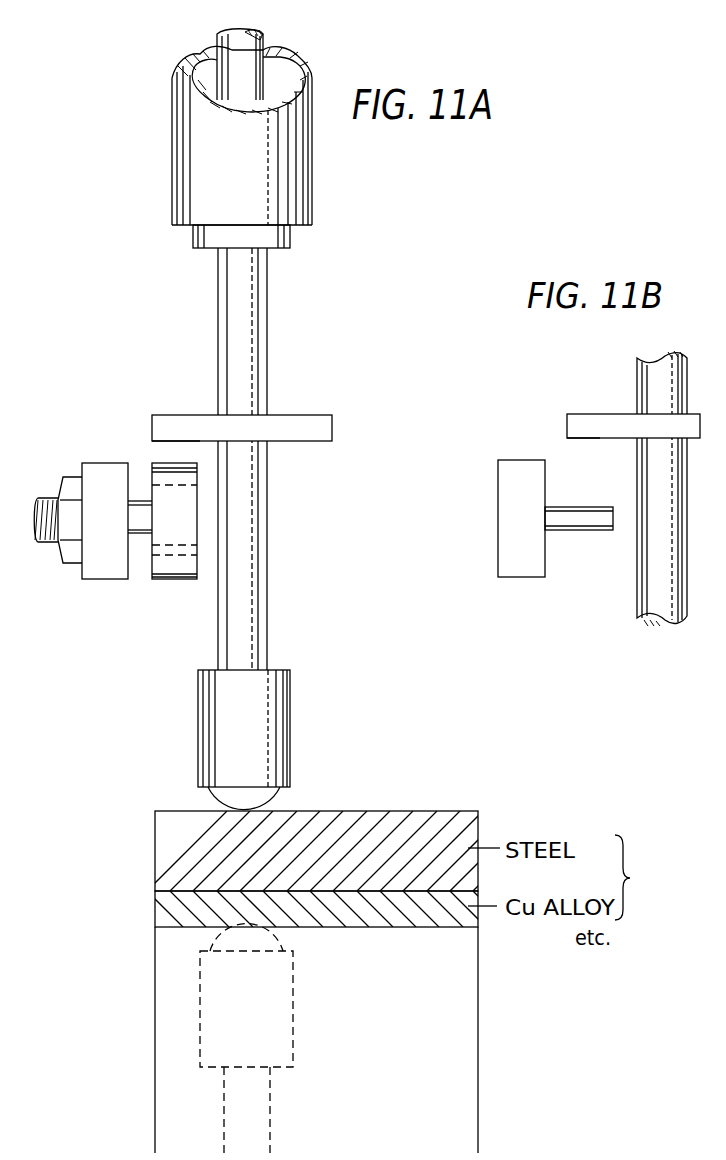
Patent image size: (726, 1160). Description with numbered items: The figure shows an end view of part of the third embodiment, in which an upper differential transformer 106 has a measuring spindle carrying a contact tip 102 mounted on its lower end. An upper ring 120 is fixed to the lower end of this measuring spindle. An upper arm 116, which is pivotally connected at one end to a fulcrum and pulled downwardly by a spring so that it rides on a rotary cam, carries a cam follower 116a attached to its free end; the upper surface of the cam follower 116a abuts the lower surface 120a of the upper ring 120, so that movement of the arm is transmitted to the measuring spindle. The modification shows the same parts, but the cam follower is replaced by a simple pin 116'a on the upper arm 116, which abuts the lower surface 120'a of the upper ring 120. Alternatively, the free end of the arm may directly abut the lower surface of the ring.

In FIG. 11A, the upper differential transformer 106 is at (182, 158).
In FIG. 11A, the upper ring 120 is at (242, 407).
In FIG. 11B, the upper ring 120 is at (633, 403).
In FIG. 11A, the lower surface 120a is at (177, 442).
In FIG. 11A, the cam follower 116a is at (165, 462).
In FIG. 11A, the upper arm 116 is at (81, 547).
In FIG. 11B, the upper arm 116 is at (521, 491).
In FIG. 11A, the contact tip 102 is at (203, 715).
In FIG. 11B, the lower surface 120'a is at (599, 456).
In FIG. 11B, the simple pin 116'a is at (589, 504).